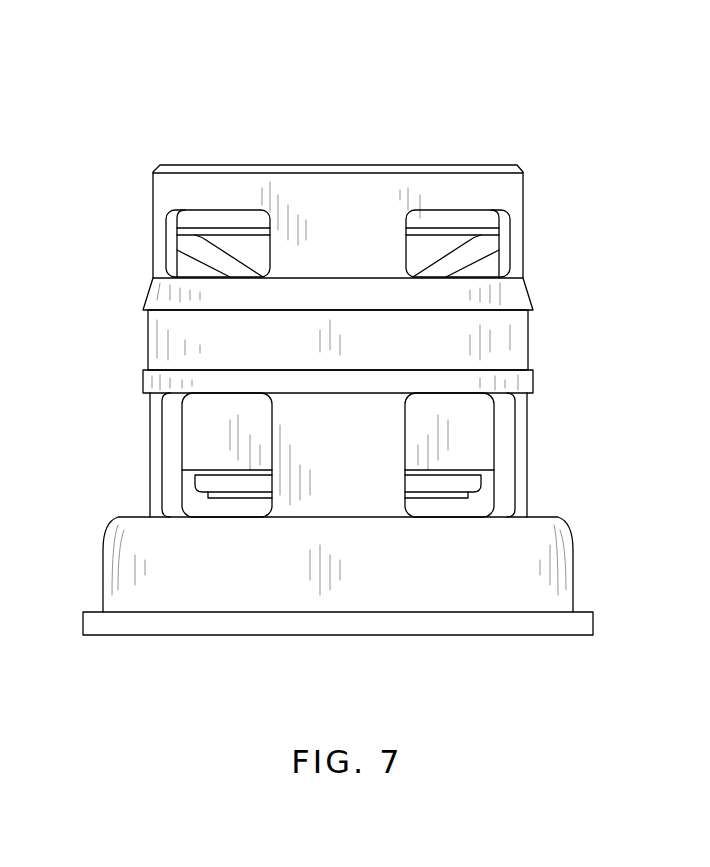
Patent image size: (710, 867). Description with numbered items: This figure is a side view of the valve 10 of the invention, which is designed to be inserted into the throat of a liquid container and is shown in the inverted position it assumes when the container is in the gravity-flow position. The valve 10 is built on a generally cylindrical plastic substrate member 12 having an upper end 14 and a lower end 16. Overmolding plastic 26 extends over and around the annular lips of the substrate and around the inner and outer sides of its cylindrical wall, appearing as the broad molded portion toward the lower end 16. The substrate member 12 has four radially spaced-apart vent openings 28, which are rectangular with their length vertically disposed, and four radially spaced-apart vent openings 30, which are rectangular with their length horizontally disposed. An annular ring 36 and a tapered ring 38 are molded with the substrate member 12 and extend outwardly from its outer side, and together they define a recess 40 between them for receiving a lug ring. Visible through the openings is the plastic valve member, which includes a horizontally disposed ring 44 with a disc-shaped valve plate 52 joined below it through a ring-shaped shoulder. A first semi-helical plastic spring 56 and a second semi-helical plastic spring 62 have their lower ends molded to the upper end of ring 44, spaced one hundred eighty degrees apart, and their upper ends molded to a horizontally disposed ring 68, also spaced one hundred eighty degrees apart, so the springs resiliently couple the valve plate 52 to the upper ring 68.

The valve 10 is at (535, 145).
The substrate member 12 is at (382, 162).
The upper end 14 is at (303, 148).
The lower end 16 is at (310, 647).
The overmolding plastic 26 is at (520, 588).
The vent openings 28 is at (175, 432).
The vent openings 30 is at (168, 223).
The annular ring 36 is at (517, 380).
The tapered ring 38 is at (520, 295).
The recess 40 is at (510, 340).
The horizontally disposed ring 44 is at (485, 457).
The valve plate 52 is at (455, 497).
The first semi-helical plastic spring 56 is at (202, 255).
The second semi-helical plastic spring 62 is at (468, 255).
The horizontally disposed ring 68 is at (483, 218).